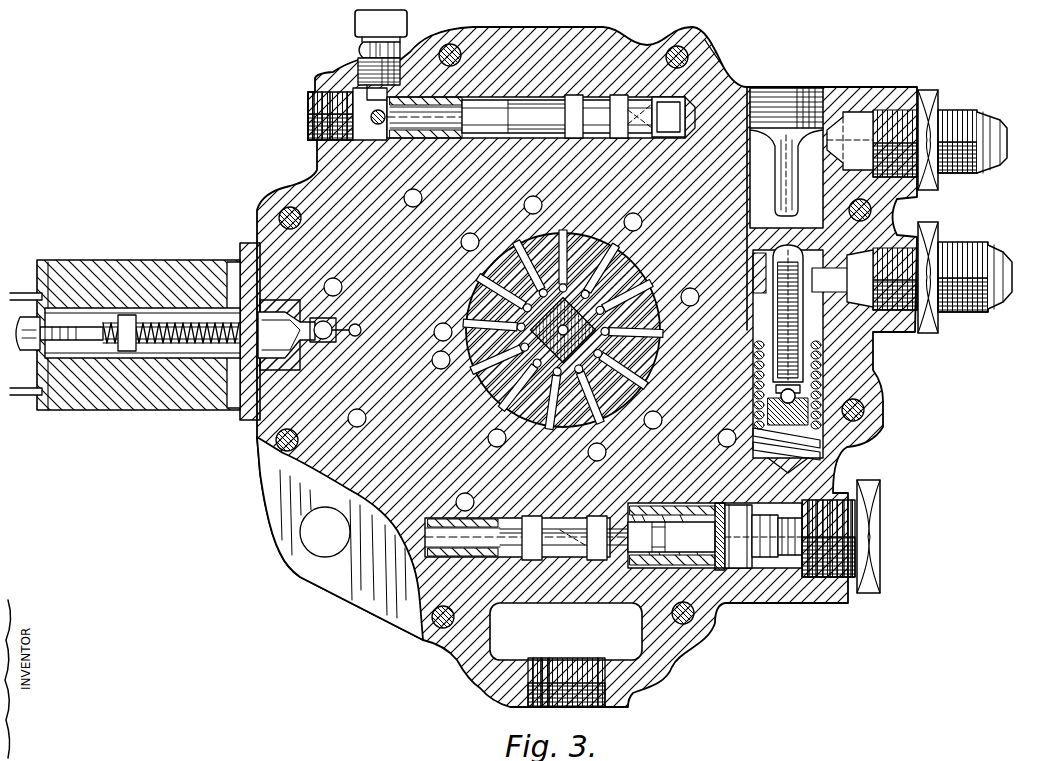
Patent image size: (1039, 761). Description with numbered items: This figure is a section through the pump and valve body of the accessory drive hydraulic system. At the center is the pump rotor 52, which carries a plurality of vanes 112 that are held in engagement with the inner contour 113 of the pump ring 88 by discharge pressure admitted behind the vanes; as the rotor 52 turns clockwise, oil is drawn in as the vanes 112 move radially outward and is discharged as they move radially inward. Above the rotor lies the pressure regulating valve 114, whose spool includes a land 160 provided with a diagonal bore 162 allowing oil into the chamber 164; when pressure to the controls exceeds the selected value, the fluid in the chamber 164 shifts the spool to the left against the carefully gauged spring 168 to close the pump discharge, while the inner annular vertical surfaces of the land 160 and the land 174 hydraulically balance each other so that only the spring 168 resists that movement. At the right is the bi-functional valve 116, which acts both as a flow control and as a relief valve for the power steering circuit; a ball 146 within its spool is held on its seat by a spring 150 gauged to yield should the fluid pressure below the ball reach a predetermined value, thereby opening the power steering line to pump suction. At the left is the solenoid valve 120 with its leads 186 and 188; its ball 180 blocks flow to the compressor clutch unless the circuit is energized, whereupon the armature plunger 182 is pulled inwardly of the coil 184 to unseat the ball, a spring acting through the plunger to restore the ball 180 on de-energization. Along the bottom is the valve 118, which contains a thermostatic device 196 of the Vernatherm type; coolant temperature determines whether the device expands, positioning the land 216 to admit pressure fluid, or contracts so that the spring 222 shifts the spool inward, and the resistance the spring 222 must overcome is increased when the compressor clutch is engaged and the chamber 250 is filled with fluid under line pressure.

The pump rotor 52 is at (584, 312).
The pump ring 88 is at (677, 657).
The vanes 112 is at (640, 272).
The inner contour 113 is at (582, 228).
The valve 114 is at (541, 307).
The valve 116 is at (758, 262).
The valve 118 is at (532, 540).
The solenoid valve 120 is at (150, 334).
The ball 146 is at (758, 400).
The spring 150 is at (848, 340).
The land 160 is at (627, 100).
The diagonal bore 162 is at (623, 132).
The chamber 164 is at (707, 85).
The spring 168 is at (398, 136).
The land 174 is at (490, 100).
The ball 180 is at (335, 337).
The armature plunger 182 is at (168, 355).
The coil 184 is at (86, 268).
The lead 186 is at (30, 293).
The lead 188 is at (26, 396).
The thermostatic device 196 is at (747, 603).
The land 216 is at (515, 520).
The spring 222 is at (432, 520).
The chamber 250 is at (662, 518).